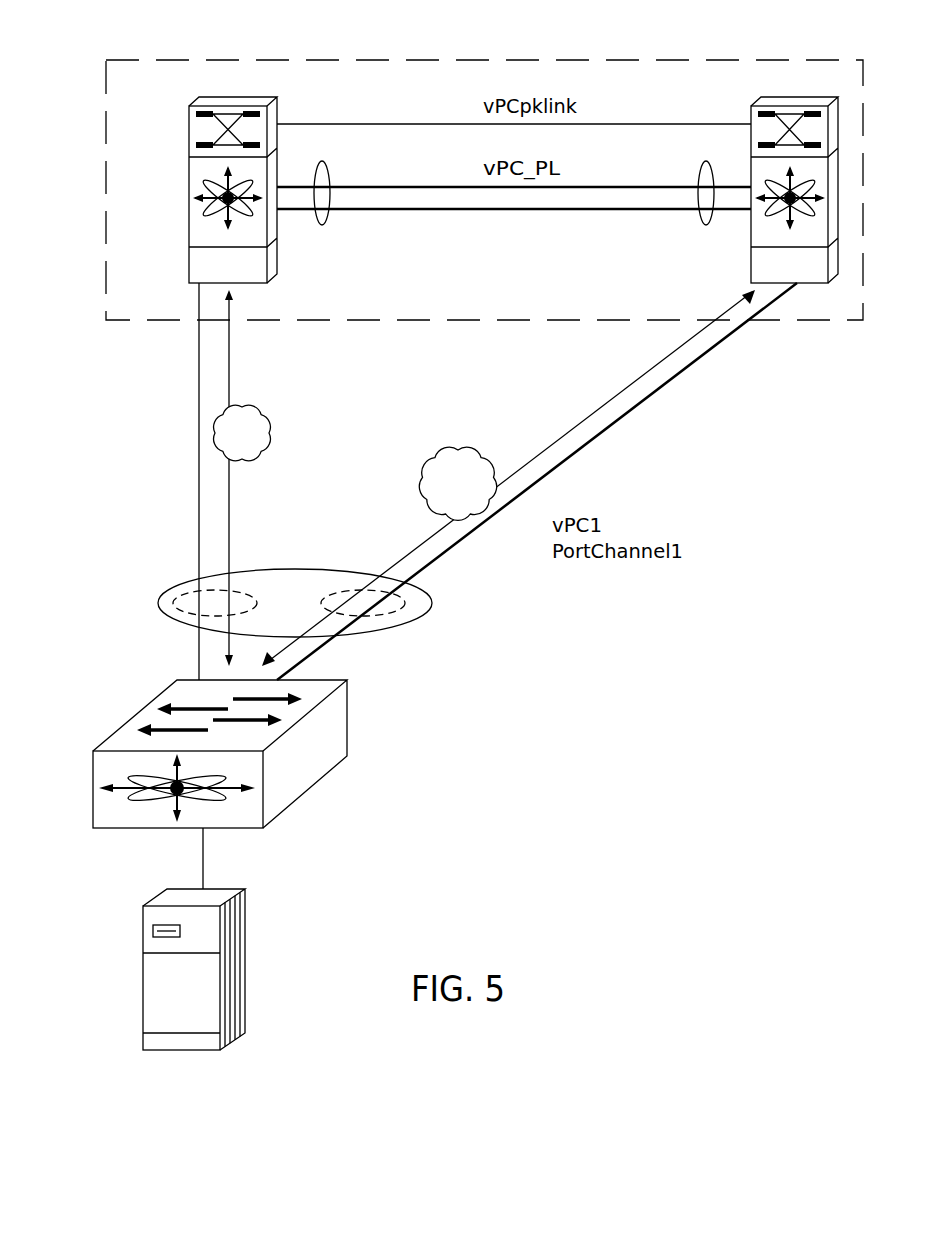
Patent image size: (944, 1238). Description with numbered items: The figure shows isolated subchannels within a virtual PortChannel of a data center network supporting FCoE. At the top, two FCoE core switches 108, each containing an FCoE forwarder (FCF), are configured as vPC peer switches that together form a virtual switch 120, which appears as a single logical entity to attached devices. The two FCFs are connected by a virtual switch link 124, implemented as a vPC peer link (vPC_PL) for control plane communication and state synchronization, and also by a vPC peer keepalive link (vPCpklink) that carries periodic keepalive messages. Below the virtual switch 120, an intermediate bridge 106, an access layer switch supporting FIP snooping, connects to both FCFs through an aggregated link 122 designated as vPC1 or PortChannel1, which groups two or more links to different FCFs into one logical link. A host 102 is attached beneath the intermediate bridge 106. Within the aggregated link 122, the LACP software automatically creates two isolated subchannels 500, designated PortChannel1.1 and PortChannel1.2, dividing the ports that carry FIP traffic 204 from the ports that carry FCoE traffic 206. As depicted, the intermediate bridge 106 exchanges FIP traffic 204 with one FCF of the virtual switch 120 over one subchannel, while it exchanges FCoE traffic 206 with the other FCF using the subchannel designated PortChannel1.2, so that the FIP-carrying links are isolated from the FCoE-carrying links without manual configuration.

The host 102 is at (187, 1050).
The intermediate bridge 106 is at (307, 792).
The FCoE core switch 108 is at (189, 194).
The virtual switch 120 is at (557, 60).
The aggregated link 122 is at (302, 567).
The virtual switch link 124 is at (322, 225).
The FIP traffic 204 is at (266, 411).
The FCoE traffic 206 is at (470, 447).
The isolated subchannel 500 is at (192, 598).